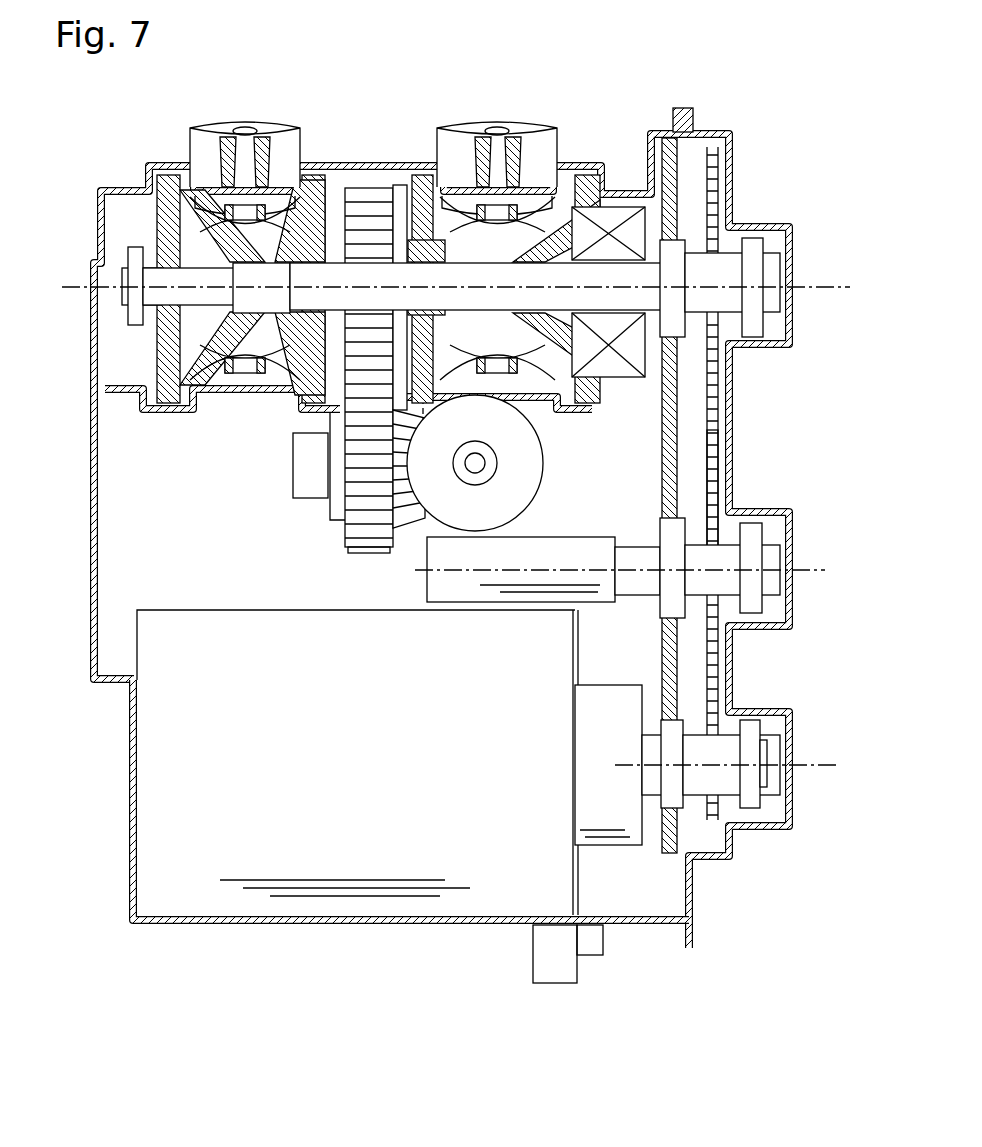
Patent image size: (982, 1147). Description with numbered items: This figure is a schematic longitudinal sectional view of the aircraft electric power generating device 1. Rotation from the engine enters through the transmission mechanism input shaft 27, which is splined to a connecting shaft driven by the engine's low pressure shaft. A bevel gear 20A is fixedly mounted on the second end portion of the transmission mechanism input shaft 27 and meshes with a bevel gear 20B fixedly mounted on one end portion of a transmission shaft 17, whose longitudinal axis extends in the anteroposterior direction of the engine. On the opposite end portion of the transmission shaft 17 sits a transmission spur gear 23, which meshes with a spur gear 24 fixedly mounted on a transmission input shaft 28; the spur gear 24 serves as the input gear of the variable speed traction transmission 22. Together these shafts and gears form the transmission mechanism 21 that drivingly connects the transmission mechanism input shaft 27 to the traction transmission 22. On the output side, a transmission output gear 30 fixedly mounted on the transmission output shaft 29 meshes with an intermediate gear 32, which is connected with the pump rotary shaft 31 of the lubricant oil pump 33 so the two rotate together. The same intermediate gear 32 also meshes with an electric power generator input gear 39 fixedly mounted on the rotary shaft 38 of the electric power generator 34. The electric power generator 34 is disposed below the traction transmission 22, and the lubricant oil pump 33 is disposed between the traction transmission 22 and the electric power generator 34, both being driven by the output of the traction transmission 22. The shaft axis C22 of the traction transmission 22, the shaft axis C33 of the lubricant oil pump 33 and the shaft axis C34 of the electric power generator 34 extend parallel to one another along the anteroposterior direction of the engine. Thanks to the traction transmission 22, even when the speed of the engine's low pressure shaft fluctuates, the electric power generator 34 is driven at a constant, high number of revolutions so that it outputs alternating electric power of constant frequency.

The electric power generating device 1 is at (723, 117).
The transmission shaft 17 is at (305, 450).
The bevel gear 20A is at (510, 498).
The bevel gear 20B is at (405, 520).
The transmission mechanism 21 is at (304, 508).
The variable speed traction transmission 22 is at (146, 227).
The transmission spur gear 23 is at (365, 540).
The spur gear 24 is at (374, 200).
The transmission mechanism input shaft 27 is at (490, 462).
The transmission input shaft 28 is at (301, 272).
The transmission output shaft 29 is at (592, 275).
The transmission output gear 30 is at (713, 194).
The pump rotary shaft 31 is at (638, 580).
The intermediate gear 32 is at (713, 478).
The lubricant oil pump 33 is at (596, 590).
The electric power generator 34 is at (157, 799).
The rotary shaft 38 is at (653, 785).
The electric power generator input gear 39 is at (714, 748).
The shaft axis C22 is at (818, 290).
The shaft axis C33 is at (805, 575).
The shaft axis C34 is at (812, 770).